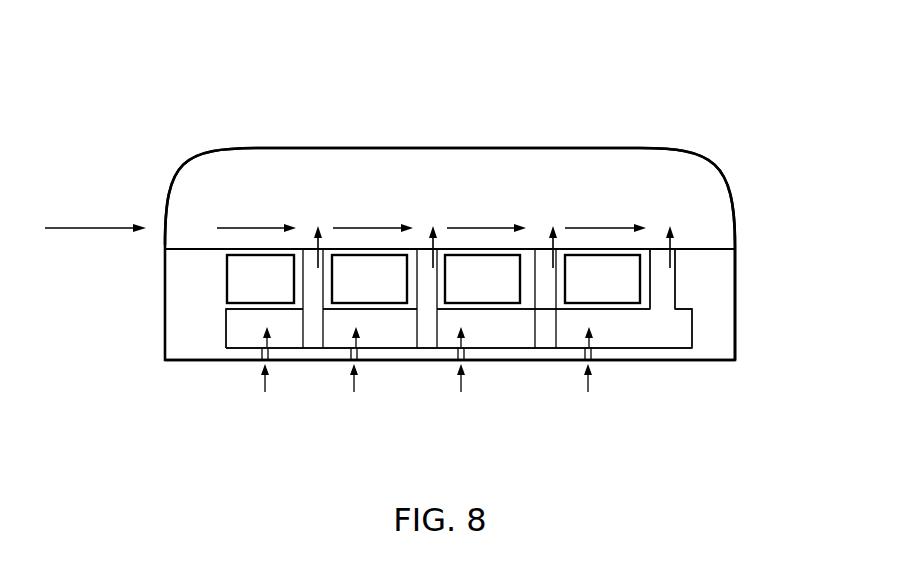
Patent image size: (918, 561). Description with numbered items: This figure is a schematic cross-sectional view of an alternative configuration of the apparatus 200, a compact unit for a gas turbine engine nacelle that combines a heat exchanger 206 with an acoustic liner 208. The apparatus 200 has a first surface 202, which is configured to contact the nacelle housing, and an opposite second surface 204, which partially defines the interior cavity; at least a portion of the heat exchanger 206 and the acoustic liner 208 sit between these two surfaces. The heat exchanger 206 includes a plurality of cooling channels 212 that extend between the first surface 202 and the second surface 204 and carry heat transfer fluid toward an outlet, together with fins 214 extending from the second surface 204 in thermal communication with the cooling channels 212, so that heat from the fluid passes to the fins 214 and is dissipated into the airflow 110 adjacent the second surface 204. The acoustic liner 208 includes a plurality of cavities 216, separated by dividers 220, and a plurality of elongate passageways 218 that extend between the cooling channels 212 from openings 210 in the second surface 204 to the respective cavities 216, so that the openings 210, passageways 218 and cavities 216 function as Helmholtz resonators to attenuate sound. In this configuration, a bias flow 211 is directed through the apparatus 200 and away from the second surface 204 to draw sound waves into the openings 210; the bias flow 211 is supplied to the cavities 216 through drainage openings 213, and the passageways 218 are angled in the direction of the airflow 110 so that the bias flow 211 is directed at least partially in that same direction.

The airflow 110 is at (90, 226).
The apparatus 200 is at (690, 77).
The first surface 202 is at (712, 362).
The second surface 204 is at (705, 250).
The heat exchanger 206 is at (166, 152).
The acoustic liner 208 is at (142, 313).
The openings 210 is at (661, 248).
The bias flow 211 is at (316, 231).
The cooling channels 212 is at (242, 304).
The drainage openings 213 is at (262, 350).
The fins 214 is at (283, 163).
The cavities 216 is at (293, 331).
The passageways 218 is at (306, 282).
The dividers 220 is at (322, 328).